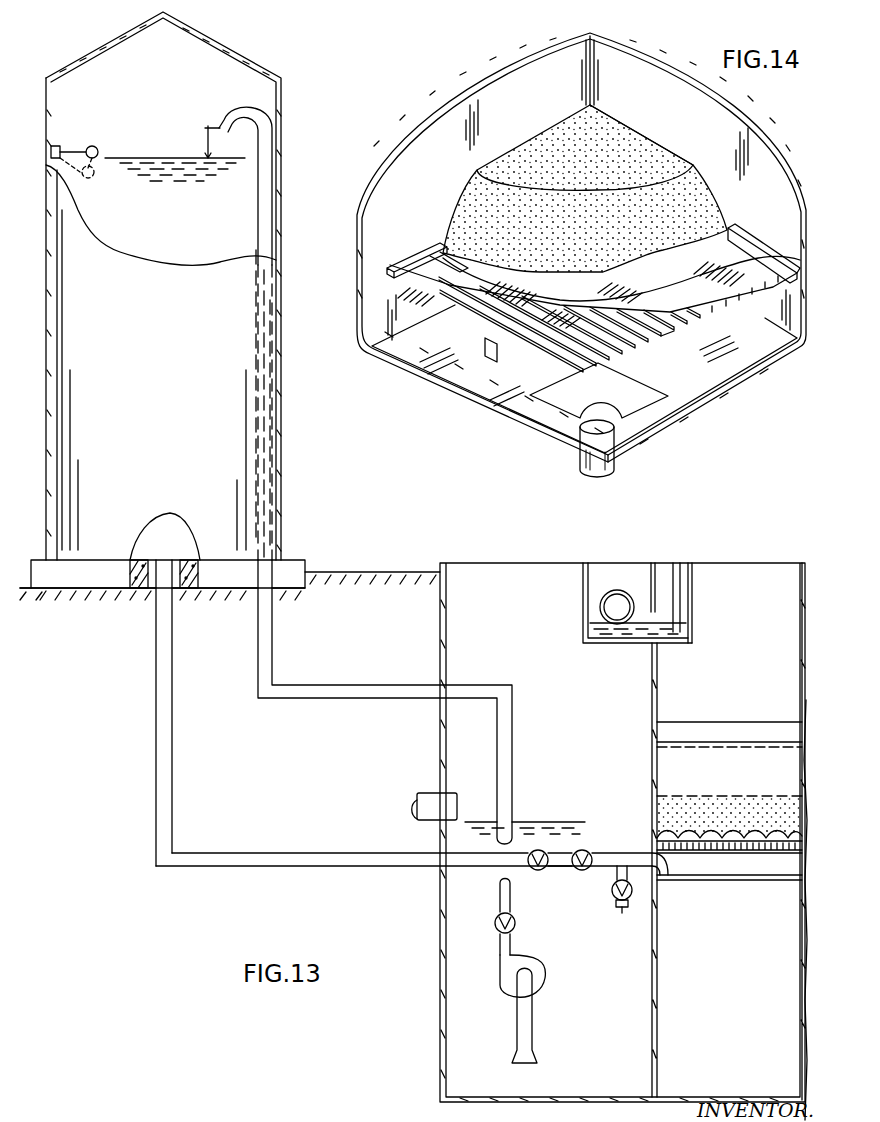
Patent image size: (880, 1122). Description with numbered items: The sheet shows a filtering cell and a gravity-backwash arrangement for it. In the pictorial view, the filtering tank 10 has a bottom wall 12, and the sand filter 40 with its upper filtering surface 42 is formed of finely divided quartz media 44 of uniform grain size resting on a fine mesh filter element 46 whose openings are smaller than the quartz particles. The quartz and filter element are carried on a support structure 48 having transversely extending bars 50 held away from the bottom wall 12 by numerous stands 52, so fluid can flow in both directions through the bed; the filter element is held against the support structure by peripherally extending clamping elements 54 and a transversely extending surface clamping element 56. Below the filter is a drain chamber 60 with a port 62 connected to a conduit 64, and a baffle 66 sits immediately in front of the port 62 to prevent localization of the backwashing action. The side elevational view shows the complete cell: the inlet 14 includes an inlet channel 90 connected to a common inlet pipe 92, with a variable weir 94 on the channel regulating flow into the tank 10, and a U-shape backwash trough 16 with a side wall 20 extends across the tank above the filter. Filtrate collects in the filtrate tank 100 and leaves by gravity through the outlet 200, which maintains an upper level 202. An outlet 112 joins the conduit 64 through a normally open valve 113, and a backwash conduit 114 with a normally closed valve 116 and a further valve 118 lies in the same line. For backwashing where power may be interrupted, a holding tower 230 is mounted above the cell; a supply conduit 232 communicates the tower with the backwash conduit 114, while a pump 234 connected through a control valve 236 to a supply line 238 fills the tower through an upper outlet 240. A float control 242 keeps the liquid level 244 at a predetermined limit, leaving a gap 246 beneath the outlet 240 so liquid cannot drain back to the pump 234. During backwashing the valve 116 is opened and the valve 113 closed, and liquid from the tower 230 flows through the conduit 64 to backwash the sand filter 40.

In FIG. 13, the filtering tank 10 is at (797, 632).
In FIG. 14, the filtering tank 10 is at (768, 147).
In FIG. 13, the bottom wall 12 is at (782, 875).
In FIG. 14, the bottom wall 12 is at (740, 378).
In FIG. 13, the inlet 14 is at (690, 596).
In FIG. 13, the U-shape trough 16 is at (697, 716).
In FIG. 13, the side wall 20 is at (722, 722).
In FIG. 13, the sand filter 40 is at (758, 803).
In FIG. 14, the sand filter 40 is at (633, 130).
In FIG. 13, the upper filtering surface 42 is at (712, 799).
In FIG. 14, the upper filtering surface 42 is at (567, 135).
In FIG. 13, the quartz media 44 is at (658, 812).
In FIG. 14, the quartz media 44 is at (712, 222).
In FIG. 13, the fine mesh filter element 46 is at (794, 834).
In FIG. 14, the fine mesh filter element 46 is at (733, 260).
In FIG. 13, the support structure 48 is at (786, 854).
In FIG. 14, the support structure 48 is at (760, 306).
In FIG. 14, the transversely extending bars 50 is at (682, 338).
In FIG. 14, the stands 52 is at (482, 348).
In FIG. 14, the peripherally extending clamping elements 54 is at (430, 252).
In FIG. 14, the transversely extending surface clamping element 56 is at (450, 278).
In FIG. 13, the drain chamber 60 is at (743, 874).
In FIG. 14, the drain chamber 60 is at (444, 364).
In FIG. 13, the port 62 is at (668, 877).
In FIG. 14, the port 62 is at (588, 436).
In FIG. 13, the conduit 64 is at (637, 853).
In FIG. 14, the conduit 64 is at (616, 460).
In FIG. 14, the baffle 66 is at (645, 382).
In FIG. 13, the inlet channel 90 is at (584, 600).
In FIG. 13, the inlet pipe 92 is at (616, 590).
In FIG. 13, the variable weir 94 is at (690, 629).
In FIG. 13, the filtrate tank 100 is at (481, 563).
In FIG. 13, the outlet 112 is at (628, 920).
In FIG. 13, the normally open valve 113 is at (616, 896).
In FIG. 13, the backwash conduit 114 is at (564, 868).
In FIG. 13, the normally closed valve 116 is at (612, 845).
In FIG. 13, the valve 118 is at (549, 885).
In FIG. 13, the outlet 200 is at (430, 793).
In FIG. 13, the upper level 202 is at (558, 822).
In FIG. 13, the holding tower 230 is at (281, 105).
In FIG. 13, the supply conduit 232 is at (173, 708).
In FIG. 13, the pump 234 is at (544, 978).
In FIG. 13, the control valve 236 is at (516, 924).
In FIG. 13, the supply line 238 is at (512, 758).
In FIG. 13, the upper outlet 240 is at (238, 108).
In FIG. 13, the float control 242 is at (88, 148).
In FIG. 13, the level 244 is at (148, 158).
In FIG. 13, the gap 246 is at (200, 154).